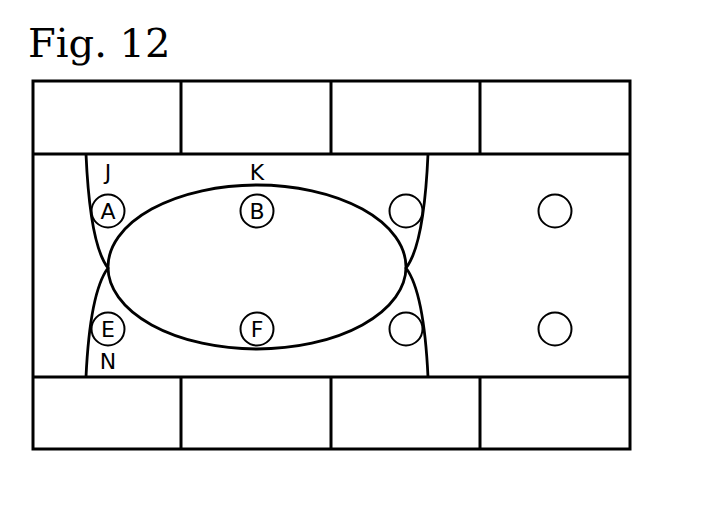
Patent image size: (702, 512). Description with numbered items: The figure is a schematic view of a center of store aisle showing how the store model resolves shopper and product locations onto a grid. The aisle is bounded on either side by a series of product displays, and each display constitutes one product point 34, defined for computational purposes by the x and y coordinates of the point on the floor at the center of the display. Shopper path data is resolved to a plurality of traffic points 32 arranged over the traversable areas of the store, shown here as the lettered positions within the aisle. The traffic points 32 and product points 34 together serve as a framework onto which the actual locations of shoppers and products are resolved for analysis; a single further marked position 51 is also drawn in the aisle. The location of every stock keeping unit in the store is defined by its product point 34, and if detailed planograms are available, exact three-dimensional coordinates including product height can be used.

The traffic points 32 is at (405, 227).
The product points 34 is at (411, 168).
The position marker O 51 is at (267, 357).